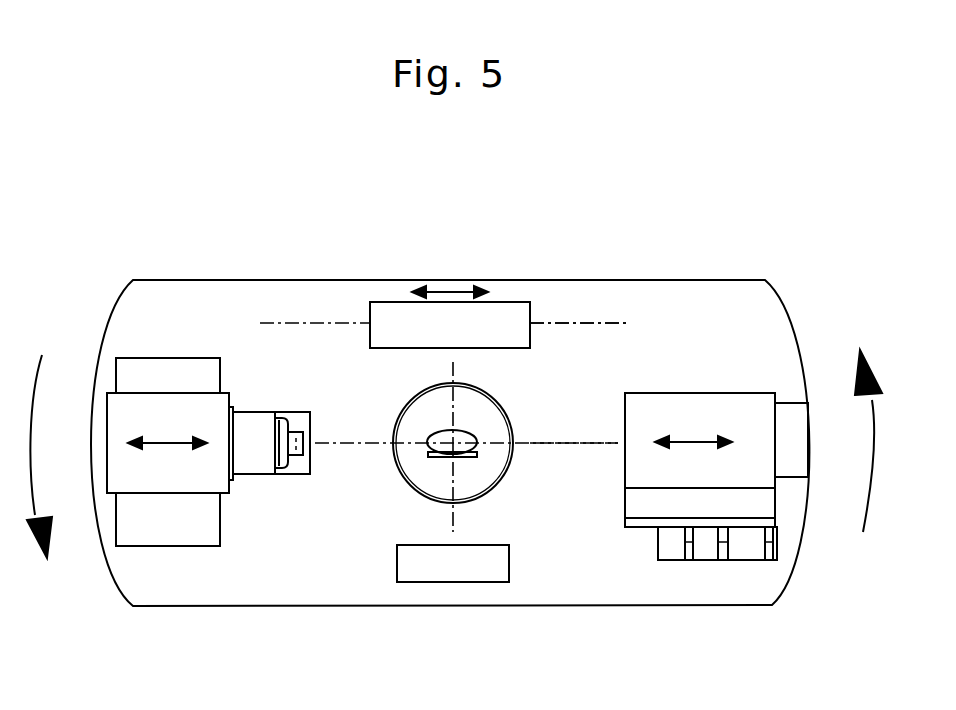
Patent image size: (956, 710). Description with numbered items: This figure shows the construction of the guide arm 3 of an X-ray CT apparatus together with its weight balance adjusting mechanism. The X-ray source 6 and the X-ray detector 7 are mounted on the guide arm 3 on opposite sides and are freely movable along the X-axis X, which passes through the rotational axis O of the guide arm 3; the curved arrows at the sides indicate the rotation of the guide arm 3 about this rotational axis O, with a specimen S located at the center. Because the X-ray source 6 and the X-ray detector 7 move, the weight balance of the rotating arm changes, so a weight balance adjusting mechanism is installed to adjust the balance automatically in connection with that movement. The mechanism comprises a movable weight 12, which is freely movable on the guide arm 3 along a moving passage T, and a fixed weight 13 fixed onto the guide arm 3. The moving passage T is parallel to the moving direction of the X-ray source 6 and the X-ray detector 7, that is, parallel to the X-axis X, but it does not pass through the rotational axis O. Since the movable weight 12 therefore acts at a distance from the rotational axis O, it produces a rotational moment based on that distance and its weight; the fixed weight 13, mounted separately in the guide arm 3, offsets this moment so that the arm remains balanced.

The guide arm 3 is at (265, 280).
The X-ray source 6 is at (217, 479).
The X-ray detector 7 is at (700, 393).
The movable weight 12 is at (517, 302).
The fixed weight 13 is at (483, 582).
The specimen S is at (442, 433).
The rotational axis O is at (463, 431).
The moving passage T is at (600, 323).
The X-axis X is at (573, 444).